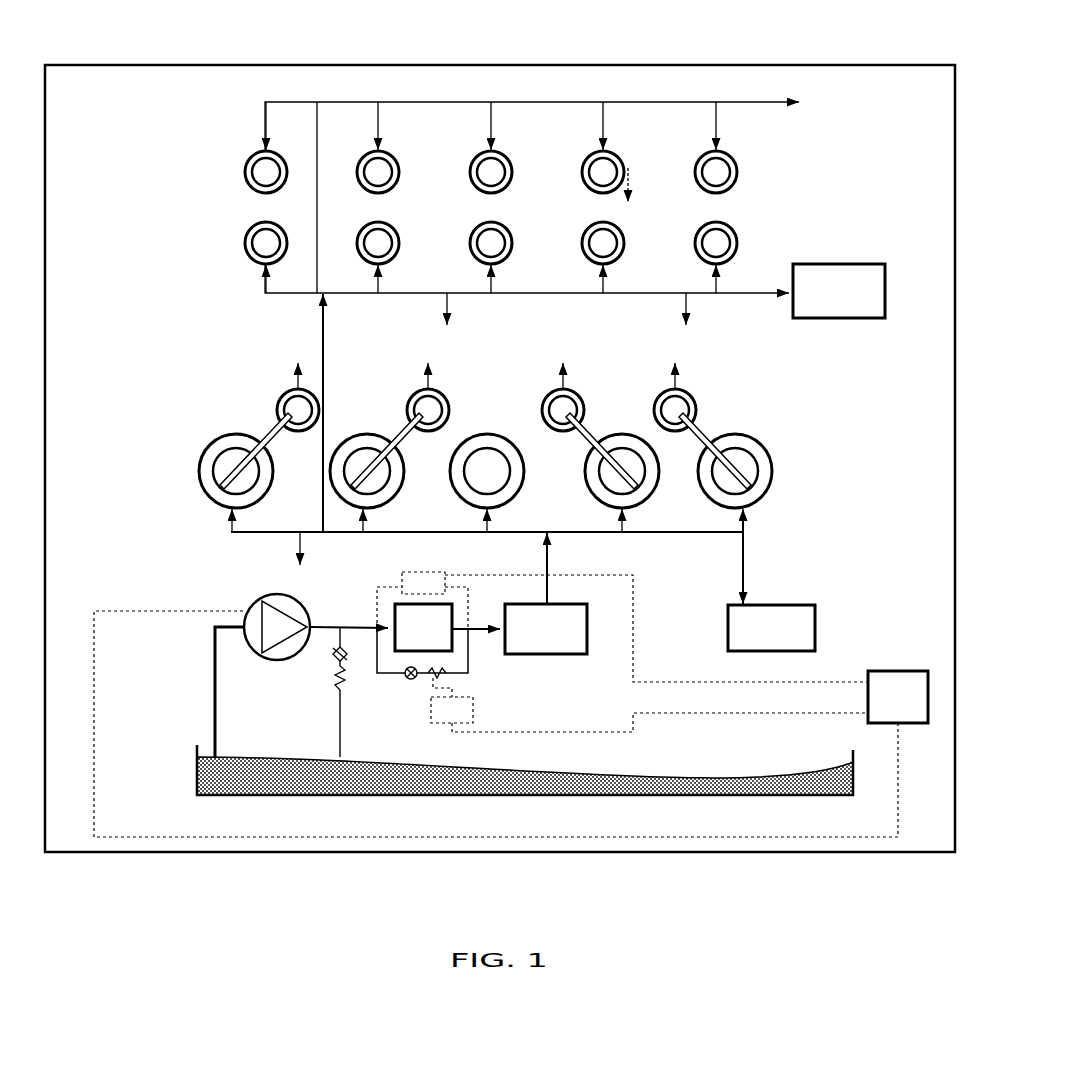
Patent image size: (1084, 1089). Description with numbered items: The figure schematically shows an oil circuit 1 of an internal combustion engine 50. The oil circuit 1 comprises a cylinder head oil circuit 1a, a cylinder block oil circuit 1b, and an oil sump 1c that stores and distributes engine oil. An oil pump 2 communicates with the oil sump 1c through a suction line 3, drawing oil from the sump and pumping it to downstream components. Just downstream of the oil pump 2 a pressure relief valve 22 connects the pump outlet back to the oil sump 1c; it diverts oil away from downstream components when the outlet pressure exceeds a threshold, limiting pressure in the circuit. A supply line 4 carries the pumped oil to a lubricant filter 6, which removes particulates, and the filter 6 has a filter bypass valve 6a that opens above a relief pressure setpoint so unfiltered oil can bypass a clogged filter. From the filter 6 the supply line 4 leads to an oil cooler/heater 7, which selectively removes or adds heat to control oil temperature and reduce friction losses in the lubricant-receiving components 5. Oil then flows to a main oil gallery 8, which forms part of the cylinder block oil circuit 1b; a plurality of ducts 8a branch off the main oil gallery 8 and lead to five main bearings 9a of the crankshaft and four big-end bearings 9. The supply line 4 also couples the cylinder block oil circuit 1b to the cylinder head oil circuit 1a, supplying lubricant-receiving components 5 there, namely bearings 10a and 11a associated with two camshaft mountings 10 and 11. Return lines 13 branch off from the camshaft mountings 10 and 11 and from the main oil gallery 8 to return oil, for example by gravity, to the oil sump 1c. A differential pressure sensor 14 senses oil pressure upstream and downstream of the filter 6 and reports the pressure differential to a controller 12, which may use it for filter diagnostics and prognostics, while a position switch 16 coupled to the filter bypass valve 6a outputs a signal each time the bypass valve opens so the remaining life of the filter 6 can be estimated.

The internal combustion engine 50 is at (62, 67).
The oil circuit 1 is at (134, 118).
The cylinder head oil circuit 1a is at (140, 214).
The cylinder block oil circuit 1b is at (147, 463).
The oil sump 1c is at (757, 792).
The oil pump 2 is at (258, 602).
The suction line 3 is at (213, 667).
The supply line 4 is at (321, 325).
The lubricant-receiving components 5 is at (492, 442).
The lubricant filter 6 is at (423, 627).
The filter bypass valve 6a is at (416, 684).
The oil cooler/heater 7 is at (546, 629).
The main oil gallery 8 is at (233, 536).
The ducts 8a is at (228, 518).
The big-end bearings 9 is at (270, 435).
The main bearings 9a is at (210, 445).
The camshaft mounting 10 is at (222, 245).
The bearings 10a is at (588, 236).
The camshaft mounting 11 is at (229, 165).
The bearings 11a is at (477, 160).
The controller 12 is at (511, 724).
The return lines 13 is at (448, 306).
The differential pressure sensor 14 is at (622, 627).
The position switch 16 is at (649, 705).
The pressure relief valve 22 is at (327, 683).